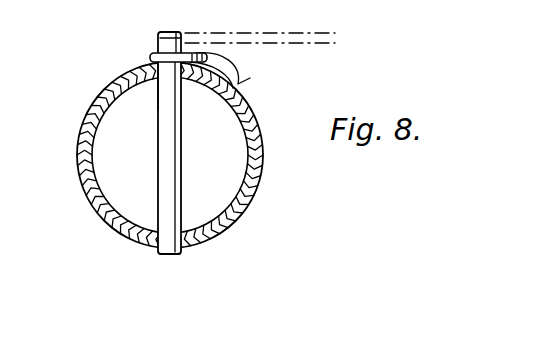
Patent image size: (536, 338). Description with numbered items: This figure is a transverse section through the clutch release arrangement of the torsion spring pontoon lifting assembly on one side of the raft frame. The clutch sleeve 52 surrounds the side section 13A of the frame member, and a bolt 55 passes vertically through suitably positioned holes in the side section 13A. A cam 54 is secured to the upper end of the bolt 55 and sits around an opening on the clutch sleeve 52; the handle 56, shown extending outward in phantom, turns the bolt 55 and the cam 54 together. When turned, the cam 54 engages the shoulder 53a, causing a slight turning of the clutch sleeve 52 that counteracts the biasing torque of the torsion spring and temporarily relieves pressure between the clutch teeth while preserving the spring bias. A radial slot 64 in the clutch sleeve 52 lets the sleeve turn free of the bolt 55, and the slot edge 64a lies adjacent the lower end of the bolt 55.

The clutch sleeve 52 is at (80, 126).
The side section of frame member 13A is at (112, 85).
The shoulder 53a is at (250, 78).
The cam 54 is at (150, 54).
The bolt 55 is at (180, 147).
The handle 56 is at (307, 27).
The pin shank 64a is at (152, 76).
The radial slot 64 is at (185, 245).